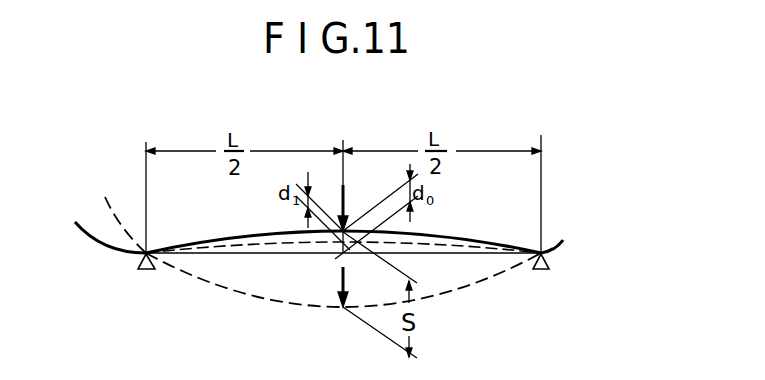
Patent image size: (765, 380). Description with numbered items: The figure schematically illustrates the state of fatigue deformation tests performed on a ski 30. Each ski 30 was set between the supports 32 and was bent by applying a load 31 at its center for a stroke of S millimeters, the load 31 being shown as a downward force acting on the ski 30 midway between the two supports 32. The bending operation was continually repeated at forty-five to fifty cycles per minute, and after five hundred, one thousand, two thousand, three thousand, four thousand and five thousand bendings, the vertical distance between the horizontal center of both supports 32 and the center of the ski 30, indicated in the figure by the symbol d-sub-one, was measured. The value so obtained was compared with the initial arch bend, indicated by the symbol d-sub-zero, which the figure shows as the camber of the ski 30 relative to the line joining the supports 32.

The ski 30 is at (90, 242).
The load 31 is at (345, 196).
The supports 32 is at (138, 261).